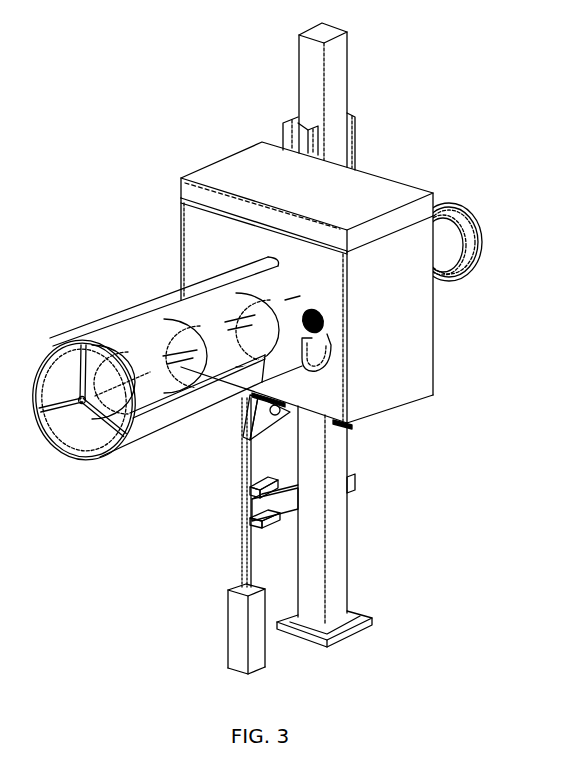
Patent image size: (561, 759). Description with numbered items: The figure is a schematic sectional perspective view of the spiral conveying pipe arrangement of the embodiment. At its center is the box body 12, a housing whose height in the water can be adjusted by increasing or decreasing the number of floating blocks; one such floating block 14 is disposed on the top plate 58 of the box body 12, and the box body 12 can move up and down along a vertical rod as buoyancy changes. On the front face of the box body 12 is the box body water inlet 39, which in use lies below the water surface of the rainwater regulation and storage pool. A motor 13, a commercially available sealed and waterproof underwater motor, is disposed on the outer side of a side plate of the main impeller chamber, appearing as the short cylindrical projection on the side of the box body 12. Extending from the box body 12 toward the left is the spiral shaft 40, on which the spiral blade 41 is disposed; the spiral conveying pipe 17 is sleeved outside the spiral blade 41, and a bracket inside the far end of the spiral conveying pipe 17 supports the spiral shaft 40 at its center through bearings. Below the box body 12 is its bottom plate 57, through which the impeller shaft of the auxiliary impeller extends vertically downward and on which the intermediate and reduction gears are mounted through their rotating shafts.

The box body 12 is at (187, 232).
The motor 13 is at (466, 228).
The floating block 14 is at (223, 168).
The spiral conveying pipe 17 is at (188, 415).
The box body water inlet 39 is at (324, 316).
The spiral shaft 40 is at (107, 392).
The spiral blade 41 is at (127, 357).
The bottom plate 57 is at (330, 423).
The top plate 58 is at (181, 200).